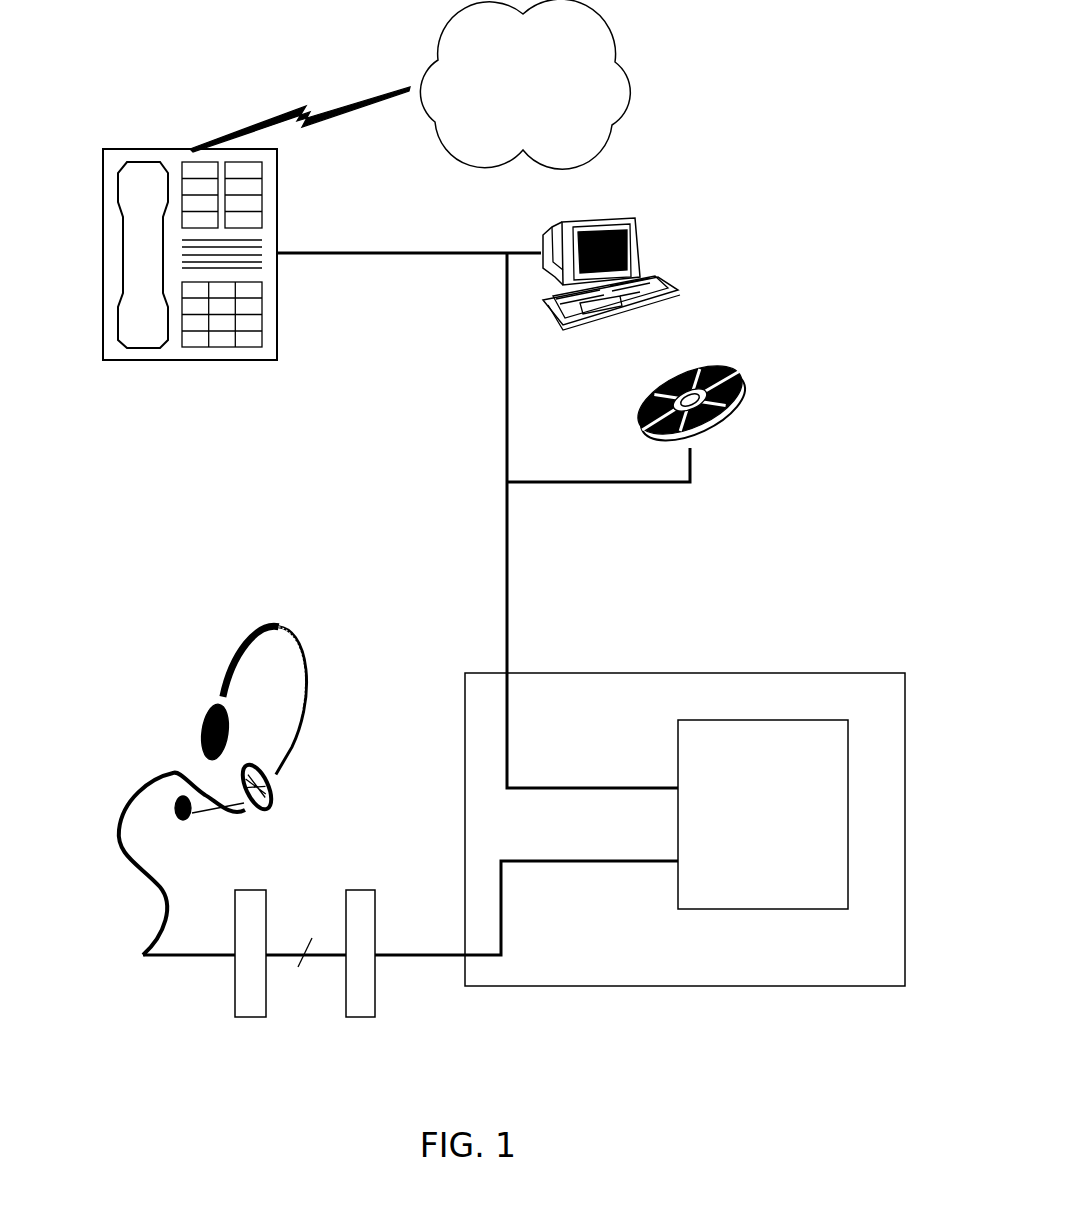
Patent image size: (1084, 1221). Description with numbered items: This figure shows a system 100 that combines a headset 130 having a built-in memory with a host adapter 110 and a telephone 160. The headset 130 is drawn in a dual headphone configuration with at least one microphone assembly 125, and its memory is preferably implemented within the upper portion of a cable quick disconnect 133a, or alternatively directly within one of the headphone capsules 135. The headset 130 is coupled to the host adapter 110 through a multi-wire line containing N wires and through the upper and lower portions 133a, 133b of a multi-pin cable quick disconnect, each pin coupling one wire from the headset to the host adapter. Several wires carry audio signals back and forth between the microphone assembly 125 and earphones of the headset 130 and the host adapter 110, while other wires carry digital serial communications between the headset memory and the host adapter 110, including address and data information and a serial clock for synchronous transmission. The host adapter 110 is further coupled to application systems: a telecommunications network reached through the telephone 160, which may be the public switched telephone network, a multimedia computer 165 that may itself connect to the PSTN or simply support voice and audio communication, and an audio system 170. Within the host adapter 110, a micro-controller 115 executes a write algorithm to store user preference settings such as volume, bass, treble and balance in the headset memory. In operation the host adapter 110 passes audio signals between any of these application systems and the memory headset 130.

The system 100 is at (828, 143).
The host adapter 110 is at (786, 673).
The micro-controller 115 is at (763, 814).
The microphone assembly 125 is at (192, 815).
The headset 130 is at (297, 640).
The headphone capsule 135 is at (207, 715).
The upper portion of cable quick disconnect 133a is at (235, 985).
The lower portion of cable quick disconnect 133b is at (345, 998).
The telephone 160 is at (280, 173).
The multimedia computer 165 is at (663, 274).
The audio system 170 is at (767, 403).